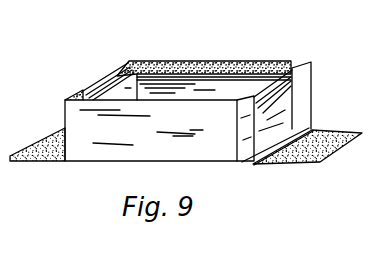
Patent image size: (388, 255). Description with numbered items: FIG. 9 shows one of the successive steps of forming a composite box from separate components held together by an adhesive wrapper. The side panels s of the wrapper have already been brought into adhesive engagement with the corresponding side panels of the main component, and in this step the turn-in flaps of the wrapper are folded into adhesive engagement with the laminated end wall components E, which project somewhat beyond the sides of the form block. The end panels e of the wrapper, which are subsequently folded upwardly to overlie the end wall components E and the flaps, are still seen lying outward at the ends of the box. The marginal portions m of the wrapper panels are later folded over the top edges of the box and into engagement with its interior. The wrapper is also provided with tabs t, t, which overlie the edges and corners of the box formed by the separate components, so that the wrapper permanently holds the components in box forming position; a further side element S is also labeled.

The side panels of the wrapper s is at (98, 158).
The back side board S is at (197, 80).
The marginal portions of the wrapper panels m is at (241, 61).
The end wall components E is at (117, 87).
The tabs t is at (145, 60).
The end panels of the wrapper e is at (43, 140).